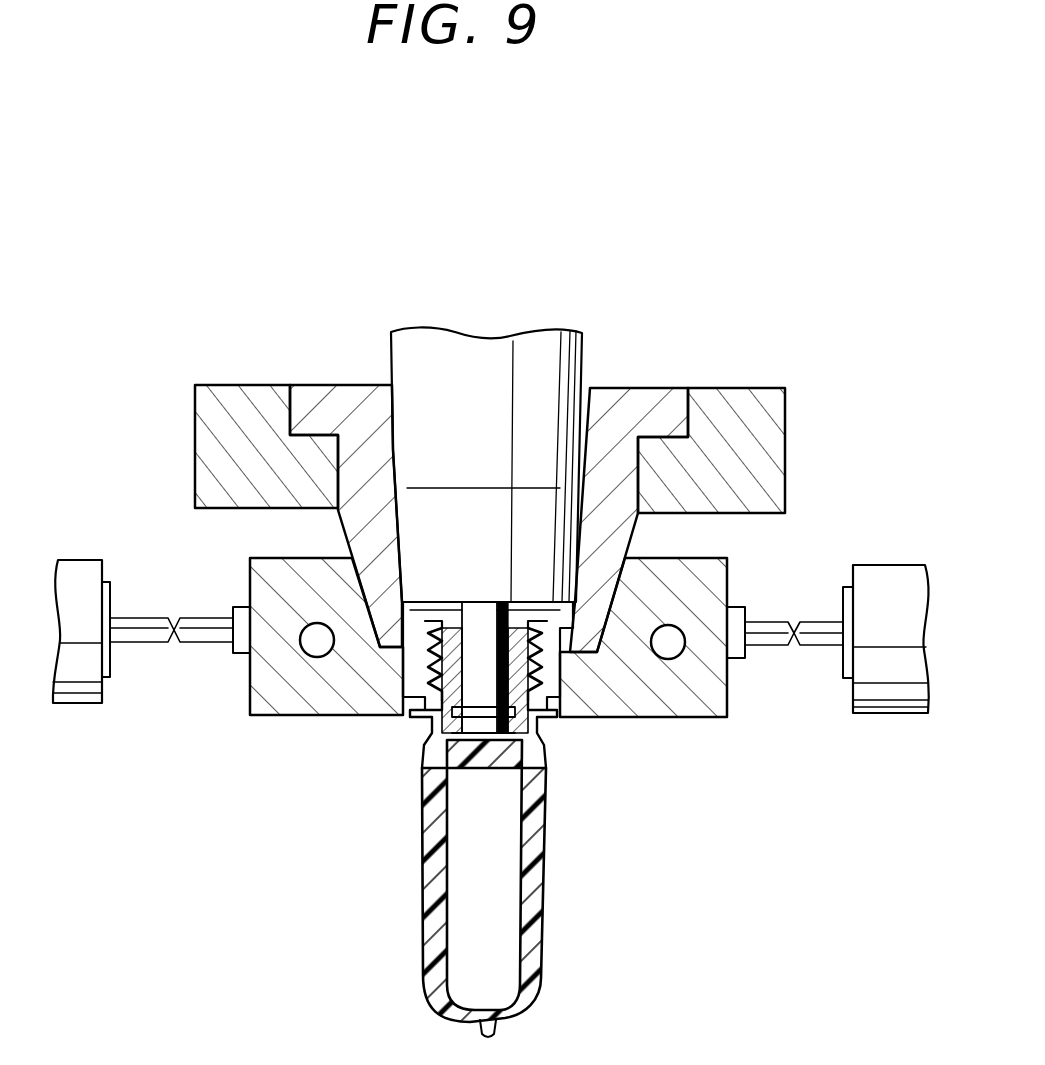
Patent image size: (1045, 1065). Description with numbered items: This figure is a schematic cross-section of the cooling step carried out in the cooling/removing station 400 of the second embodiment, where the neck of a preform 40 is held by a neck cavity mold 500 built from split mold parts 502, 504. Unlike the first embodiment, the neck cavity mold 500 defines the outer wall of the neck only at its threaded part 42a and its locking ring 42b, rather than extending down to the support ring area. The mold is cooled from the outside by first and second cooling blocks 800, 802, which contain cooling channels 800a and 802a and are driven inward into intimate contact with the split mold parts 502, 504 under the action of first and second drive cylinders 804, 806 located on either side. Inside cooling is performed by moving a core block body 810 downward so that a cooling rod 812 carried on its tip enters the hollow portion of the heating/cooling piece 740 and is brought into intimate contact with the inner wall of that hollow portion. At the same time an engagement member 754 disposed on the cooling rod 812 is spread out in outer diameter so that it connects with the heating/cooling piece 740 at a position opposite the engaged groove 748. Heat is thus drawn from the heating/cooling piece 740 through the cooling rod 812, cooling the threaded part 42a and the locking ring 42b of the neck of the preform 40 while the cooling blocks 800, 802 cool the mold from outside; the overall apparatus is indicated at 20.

The sample analyzing apparatus 20 is at (794, 451).
The preform 40 is at (547, 900).
The threaded part 42a is at (400, 642).
The locking ring 42b is at (432, 656).
The cooling/removing station 400 is at (590, 192).
The neck cavity mold 500 is at (550, 407).
The split mold part 502 is at (640, 538).
The split mold part 504 is at (355, 533).
The heating/cooling piece 740 is at (560, 672).
The engaged groove 748 is at (462, 737).
The engagement member 754 is at (550, 745).
The first cooling block 800 is at (694, 692).
The cooling channel 800a is at (685, 650).
The second cooling block 802 is at (294, 693).
The cooling channel 802a is at (315, 657).
The first drive cylinder 804 is at (887, 713).
The second drive cylinder 806 is at (82, 705).
The core block body 810 is at (413, 375).
The cooling rod 812 is at (512, 632).